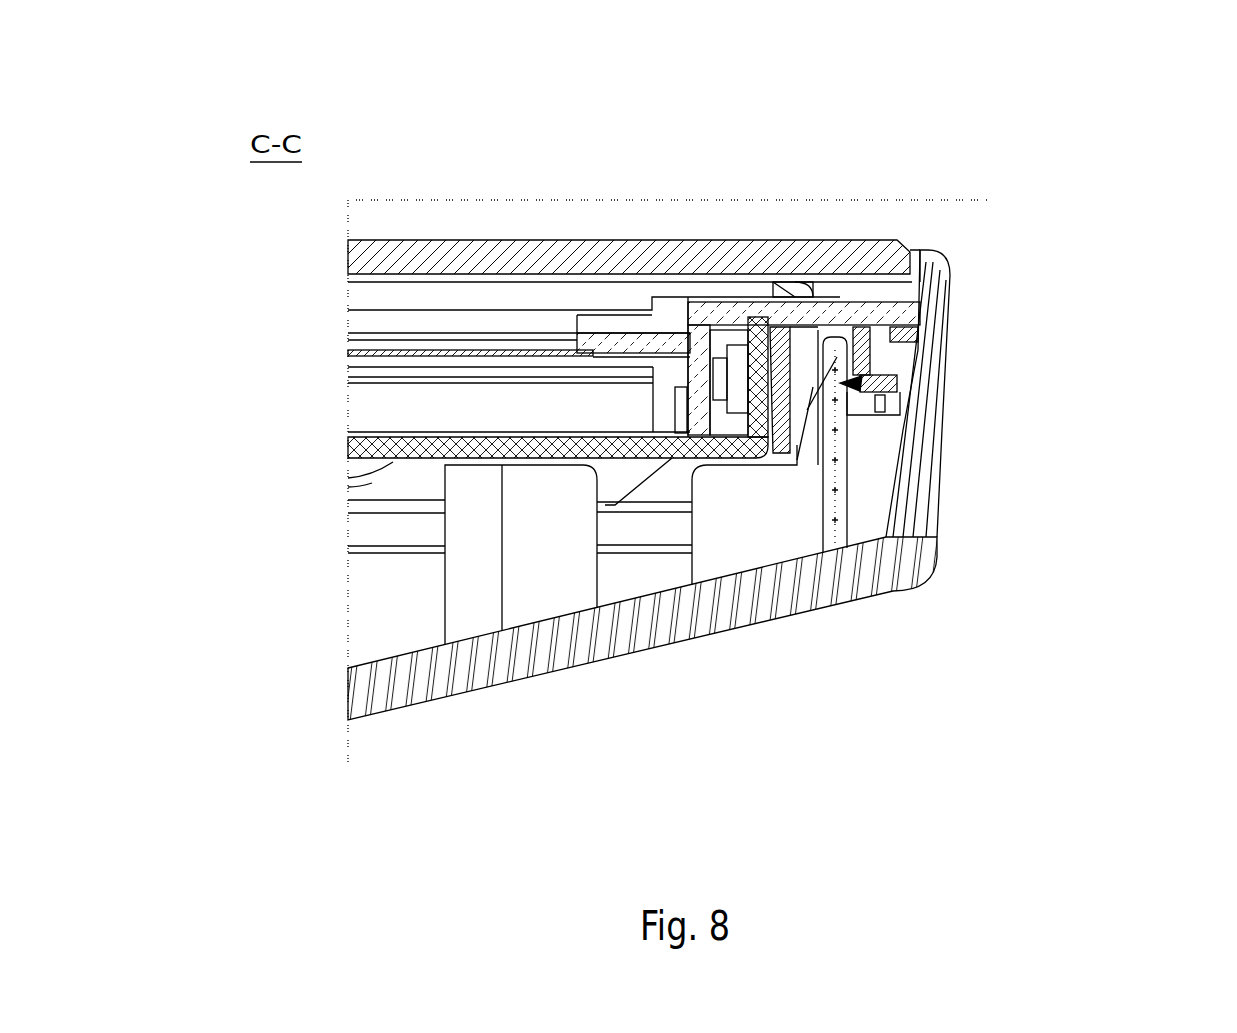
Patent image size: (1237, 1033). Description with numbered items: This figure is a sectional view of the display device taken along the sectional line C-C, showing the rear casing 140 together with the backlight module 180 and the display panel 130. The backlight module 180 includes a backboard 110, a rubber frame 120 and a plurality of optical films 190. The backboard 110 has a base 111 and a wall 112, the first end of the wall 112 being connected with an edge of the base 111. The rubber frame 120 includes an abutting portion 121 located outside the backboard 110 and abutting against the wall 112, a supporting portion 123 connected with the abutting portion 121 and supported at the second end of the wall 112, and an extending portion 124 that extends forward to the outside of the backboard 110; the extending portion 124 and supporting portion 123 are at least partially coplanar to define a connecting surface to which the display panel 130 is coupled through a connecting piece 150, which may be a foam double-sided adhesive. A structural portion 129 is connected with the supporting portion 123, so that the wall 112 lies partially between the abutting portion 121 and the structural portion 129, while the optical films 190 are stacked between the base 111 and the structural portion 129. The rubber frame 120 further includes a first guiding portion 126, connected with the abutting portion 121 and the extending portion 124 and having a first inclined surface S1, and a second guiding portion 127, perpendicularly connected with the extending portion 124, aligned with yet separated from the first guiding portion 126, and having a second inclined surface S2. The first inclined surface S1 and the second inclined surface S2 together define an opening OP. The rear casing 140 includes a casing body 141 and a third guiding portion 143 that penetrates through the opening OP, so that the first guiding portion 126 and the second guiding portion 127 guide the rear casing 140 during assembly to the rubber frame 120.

The backboard 110 is at (232, 393).
The base 111 is at (748, 405).
The wall 112 is at (348, 450).
The rubber frame 120 is at (1191, 65).
The abutting portion 121 is at (787, 440).
The supporting portion 123 is at (760, 318).
The extending portion 124 is at (835, 315).
The first guiding portion 126 is at (870, 365).
The second guiding portion 127 is at (865, 340).
The structural portion 129 is at (665, 345).
The display panel 130 is at (607, 243).
The rear casing 140 is at (838, 814).
The casing body 141 is at (755, 607).
The third guiding portion 143 is at (832, 500).
The connecting piece 150 is at (793, 297).
The backlight module 180 is at (1124, 32).
The optical films 190 is at (348, 393).
The opening OP is at (860, 383).
The first inclined surface S1 is at (855, 408).
The second inclined surface S2 is at (855, 388).